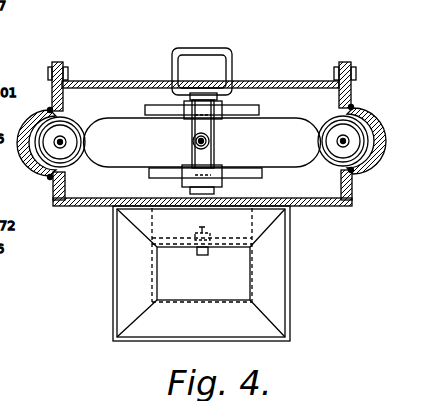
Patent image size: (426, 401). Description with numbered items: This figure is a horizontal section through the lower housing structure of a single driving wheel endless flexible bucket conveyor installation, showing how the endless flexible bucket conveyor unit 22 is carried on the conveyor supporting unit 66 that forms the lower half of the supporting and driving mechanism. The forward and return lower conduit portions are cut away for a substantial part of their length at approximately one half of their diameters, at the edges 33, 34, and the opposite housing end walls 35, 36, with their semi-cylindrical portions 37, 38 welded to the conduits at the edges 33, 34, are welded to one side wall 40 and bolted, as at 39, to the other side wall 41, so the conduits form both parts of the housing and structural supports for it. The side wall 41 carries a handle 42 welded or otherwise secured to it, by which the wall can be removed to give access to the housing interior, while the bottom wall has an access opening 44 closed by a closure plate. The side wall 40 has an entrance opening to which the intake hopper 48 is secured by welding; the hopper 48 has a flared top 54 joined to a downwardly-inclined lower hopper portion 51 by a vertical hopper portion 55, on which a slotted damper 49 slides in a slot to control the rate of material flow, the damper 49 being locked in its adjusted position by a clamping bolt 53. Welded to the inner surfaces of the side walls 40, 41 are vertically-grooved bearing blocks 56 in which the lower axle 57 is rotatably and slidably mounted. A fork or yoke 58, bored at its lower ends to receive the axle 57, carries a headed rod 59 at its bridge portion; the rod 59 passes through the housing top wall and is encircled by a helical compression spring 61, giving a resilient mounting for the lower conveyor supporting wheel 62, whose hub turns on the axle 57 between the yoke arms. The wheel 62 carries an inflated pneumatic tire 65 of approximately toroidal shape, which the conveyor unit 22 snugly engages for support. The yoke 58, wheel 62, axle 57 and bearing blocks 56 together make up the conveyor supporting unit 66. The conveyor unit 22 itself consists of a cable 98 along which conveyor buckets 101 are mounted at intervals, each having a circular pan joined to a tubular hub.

The endless flexible bucket conveyor unit 22 is at (0, 37).
The edge 33 is at (349, 108).
The edge 34 is at (53, 110).
The housing end wall 35 is at (352, 86).
The housing end wall 36 is at (51, 97).
The semi-cylindrical portion 37 is at (376, 154).
The semi-cylindrical portion 38 is at (33, 160).
The bolts 39 is at (48, 73).
The side wall 40 is at (88, 206).
The side wall 41 is at (289, 80).
The handle 42 is at (218, 49).
The access opening 44 is at (259, 113).
The intake hopper 48 is at (272, 260).
The damper 49 is at (250, 238).
The lower hopper portion 51 is at (288, 232).
The clamping bolt 53 is at (205, 256).
The flared top 54 is at (266, 296).
The vertical hopper portion 55 is at (207, 298).
The bearing blocks 56 is at (185, 90).
The lower axle 57 is at (200, 95).
The fork or yoke 58 is at (211, 129).
The headed rod 59 is at (194, 146).
The helical compression spring 61 is at (194, 135).
The lower conveyor supporting wheel 62 is at (117, 110).
The inflated pneumatic tire 65 is at (117, 162).
The conveyor supporting unit 66 is at (222, 112).
The cable 98 is at (65, 150).
The conveyor bucket 101 is at (68, 201).